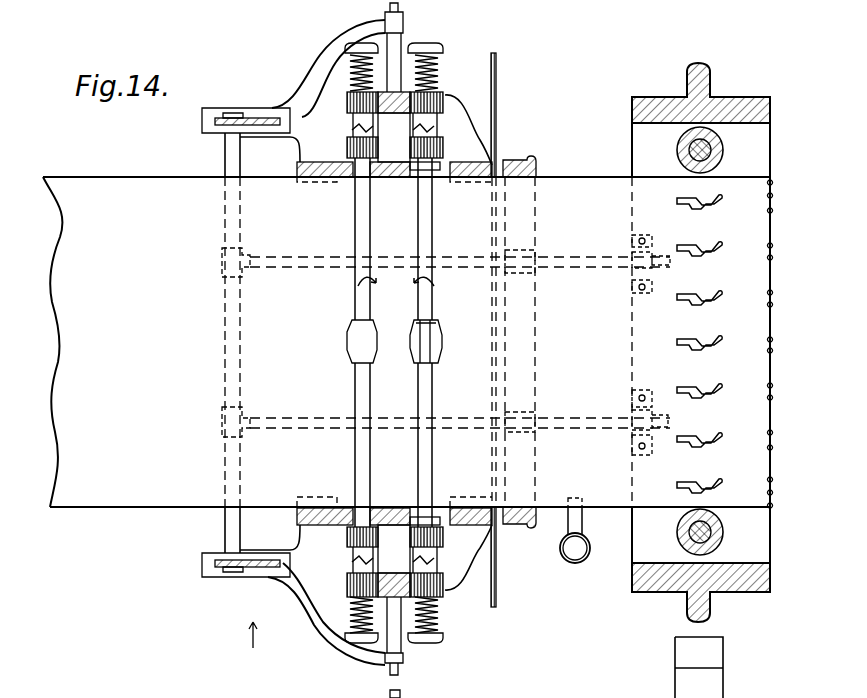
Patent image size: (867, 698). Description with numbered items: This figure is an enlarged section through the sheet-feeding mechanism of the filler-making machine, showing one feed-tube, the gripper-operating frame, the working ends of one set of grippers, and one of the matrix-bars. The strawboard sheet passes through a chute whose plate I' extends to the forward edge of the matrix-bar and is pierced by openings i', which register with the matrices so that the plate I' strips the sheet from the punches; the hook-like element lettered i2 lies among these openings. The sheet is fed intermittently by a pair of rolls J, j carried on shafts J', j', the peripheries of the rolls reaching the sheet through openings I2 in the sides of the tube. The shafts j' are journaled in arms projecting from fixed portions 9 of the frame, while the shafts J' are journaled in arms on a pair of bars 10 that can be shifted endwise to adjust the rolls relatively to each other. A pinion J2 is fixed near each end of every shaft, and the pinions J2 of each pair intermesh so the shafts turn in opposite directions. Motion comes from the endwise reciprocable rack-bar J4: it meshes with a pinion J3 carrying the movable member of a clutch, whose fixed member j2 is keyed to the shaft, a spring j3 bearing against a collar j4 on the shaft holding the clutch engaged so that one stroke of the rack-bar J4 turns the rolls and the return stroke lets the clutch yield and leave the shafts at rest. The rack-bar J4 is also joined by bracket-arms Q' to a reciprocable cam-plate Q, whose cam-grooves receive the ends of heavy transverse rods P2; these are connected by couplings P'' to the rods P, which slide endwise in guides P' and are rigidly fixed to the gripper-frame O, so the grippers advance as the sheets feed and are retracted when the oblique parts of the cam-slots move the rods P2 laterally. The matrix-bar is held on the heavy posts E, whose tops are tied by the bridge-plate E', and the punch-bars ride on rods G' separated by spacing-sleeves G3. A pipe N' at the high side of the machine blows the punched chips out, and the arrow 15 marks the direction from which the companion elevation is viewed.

The plate I' is at (80, 342).
The transverse rods P2 is at (222, 135).
The cam-plate Q is at (247, 326).
The bracket-arms Q' is at (326, 342).
The rack-bar J4 is at (435, 45).
The shoulder or collar j4 is at (350, 45).
The spring j3 is at (352, 75).
The pinion J3 is at (347, 112).
The clutch member j2 is at (353, 128).
The pinion J2 is at (378, 155).
The fixed portions of the frame 9 is at (323, 180).
The bars 10 is at (400, 178).
The shaft j' is at (351, 342).
The roll j is at (344, 348).
The shaft J' is at (436, 342).
The roll J is at (433, 342).
The openings I2 is at (440, 330).
The couplings P'' is at (216, 342).
The rods P is at (460, 342).
The guides P' is at (635, 345).
The gripper-operating frame O is at (517, 507).
The pipe N' is at (575, 544).
The posts E is at (701, 120).
The bridge-plate E' is at (701, 399).
The spacing-sleeves G3 is at (676, 150).
The rods G' is at (719, 341).
The openings i' is at (725, 344).
The hook i2 is at (718, 478).
The arrow 15 is at (244, 638).